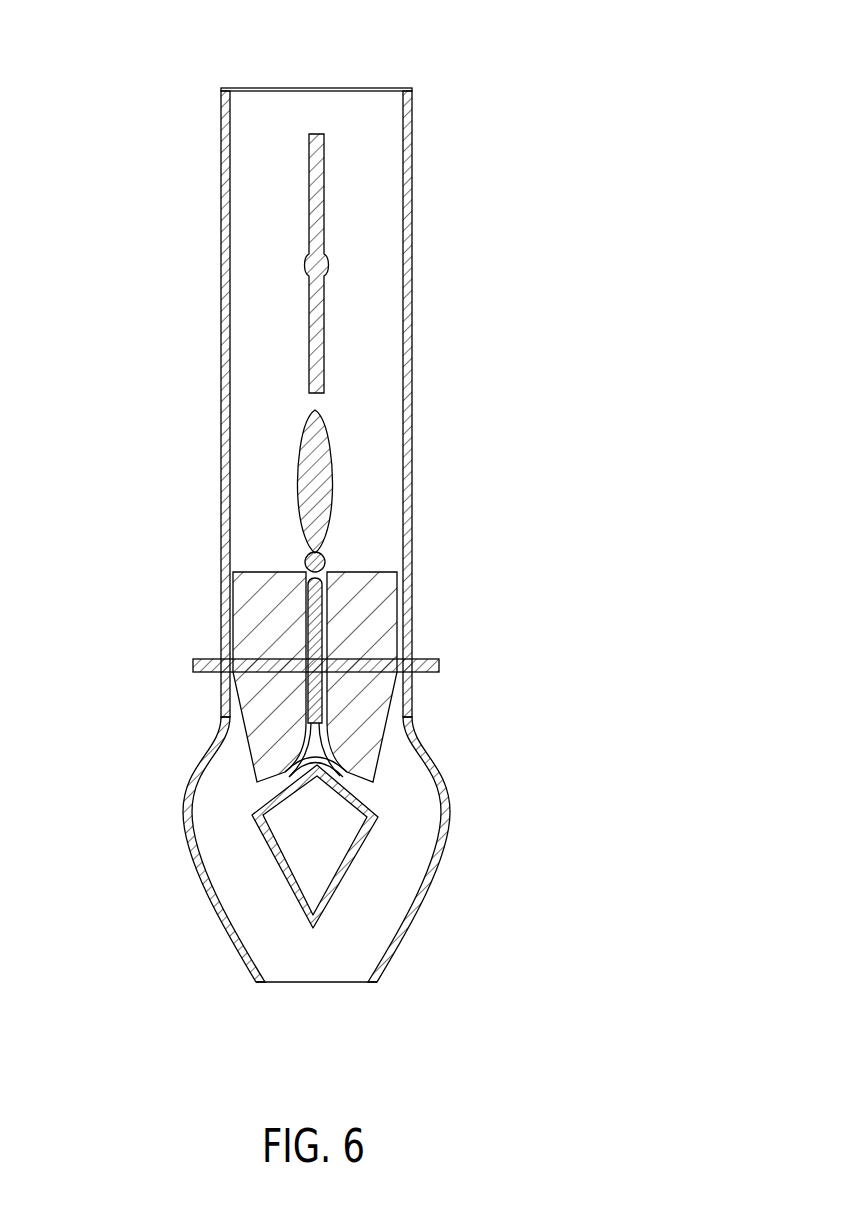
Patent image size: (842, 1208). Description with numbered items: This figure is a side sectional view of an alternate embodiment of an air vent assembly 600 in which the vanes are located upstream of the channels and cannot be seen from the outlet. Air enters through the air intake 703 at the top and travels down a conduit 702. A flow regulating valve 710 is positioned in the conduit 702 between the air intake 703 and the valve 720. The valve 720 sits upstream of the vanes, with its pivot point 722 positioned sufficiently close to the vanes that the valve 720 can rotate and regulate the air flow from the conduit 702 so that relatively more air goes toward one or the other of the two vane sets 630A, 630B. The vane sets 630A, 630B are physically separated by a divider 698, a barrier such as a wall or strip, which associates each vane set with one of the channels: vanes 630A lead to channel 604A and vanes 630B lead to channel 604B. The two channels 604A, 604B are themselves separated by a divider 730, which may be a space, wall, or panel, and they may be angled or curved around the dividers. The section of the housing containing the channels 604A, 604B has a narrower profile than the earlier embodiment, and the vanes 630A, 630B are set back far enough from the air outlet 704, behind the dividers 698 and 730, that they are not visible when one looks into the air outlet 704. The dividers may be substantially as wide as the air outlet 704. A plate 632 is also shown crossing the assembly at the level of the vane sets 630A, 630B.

The air vent assembly 600 is at (141, 94).
The air intake 703 is at (334, 87).
The conduit 702 is at (372, 158).
The channel 604A is at (220, 845).
The channel 604B is at (415, 847).
The air outlet 704 is at (303, 984).
The flow regulating valve 710 is at (323, 298).
The valve 720 is at (328, 475).
The pivot point 722 is at (325, 560).
The vane set 630A is at (262, 637).
The vane set 630B is at (380, 622).
The plate 632 is at (439, 666).
The divider 698 is at (317, 742).
The divider 730 is at (332, 857).